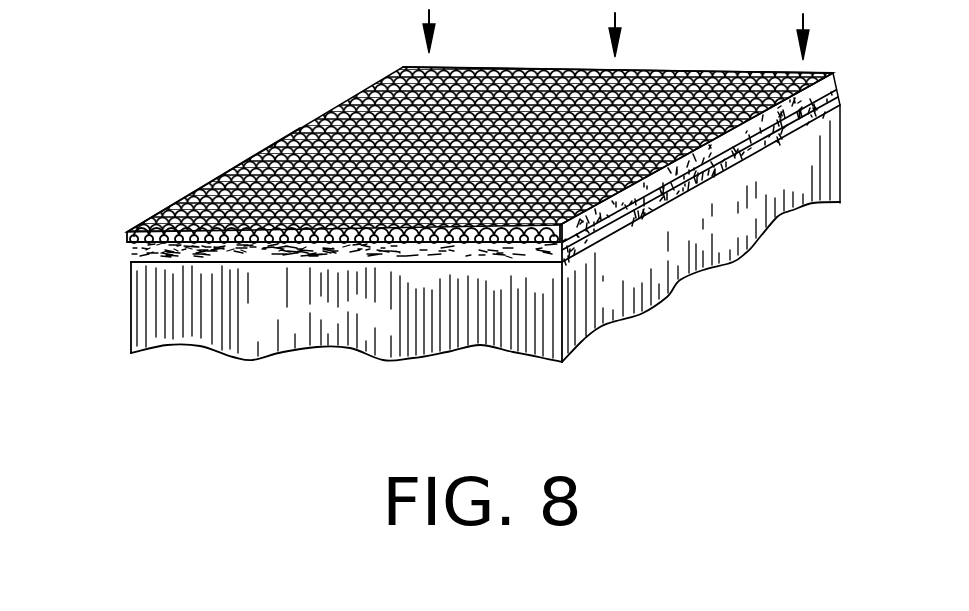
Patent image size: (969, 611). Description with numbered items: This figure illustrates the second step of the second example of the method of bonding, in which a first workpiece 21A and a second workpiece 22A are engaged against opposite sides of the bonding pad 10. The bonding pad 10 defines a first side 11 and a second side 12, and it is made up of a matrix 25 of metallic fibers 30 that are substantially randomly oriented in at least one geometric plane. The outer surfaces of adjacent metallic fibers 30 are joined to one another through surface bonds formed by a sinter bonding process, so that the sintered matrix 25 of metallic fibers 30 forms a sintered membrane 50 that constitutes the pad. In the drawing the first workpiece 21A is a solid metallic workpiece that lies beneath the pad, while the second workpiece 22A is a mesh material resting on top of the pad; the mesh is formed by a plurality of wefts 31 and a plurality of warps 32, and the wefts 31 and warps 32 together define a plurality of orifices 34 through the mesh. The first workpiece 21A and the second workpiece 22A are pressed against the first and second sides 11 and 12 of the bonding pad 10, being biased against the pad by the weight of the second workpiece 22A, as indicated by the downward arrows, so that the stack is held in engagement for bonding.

The bonding pad 10 is at (253, 263).
The first side 11 is at (450, 265).
The second side 12 is at (490, 265).
The first workpiece 21A is at (532, 333).
The second workpiece 22A is at (243, 181).
The matrix 25 is at (287, 264).
The metallic fibers 30 is at (357, 264).
The wefts 31 is at (200, 188).
The warps 32 is at (319, 117).
The orifices 34 is at (380, 82).
The sintered membrane 50 is at (393, 264).